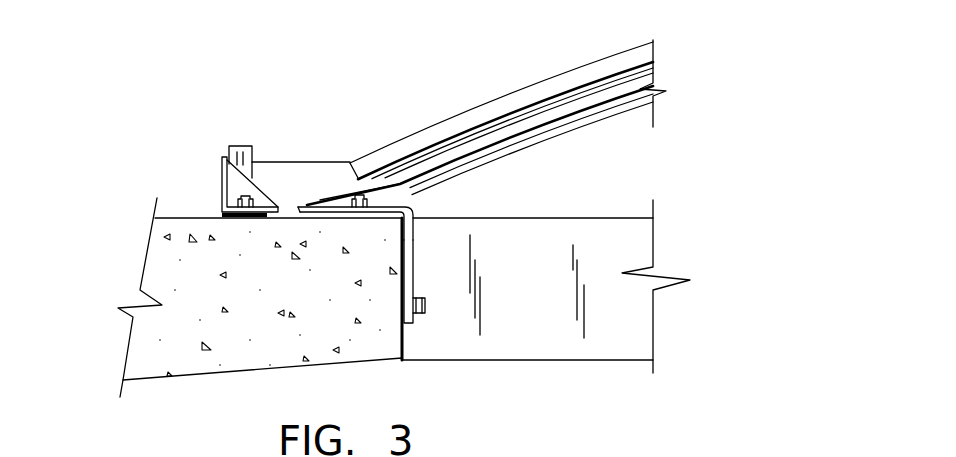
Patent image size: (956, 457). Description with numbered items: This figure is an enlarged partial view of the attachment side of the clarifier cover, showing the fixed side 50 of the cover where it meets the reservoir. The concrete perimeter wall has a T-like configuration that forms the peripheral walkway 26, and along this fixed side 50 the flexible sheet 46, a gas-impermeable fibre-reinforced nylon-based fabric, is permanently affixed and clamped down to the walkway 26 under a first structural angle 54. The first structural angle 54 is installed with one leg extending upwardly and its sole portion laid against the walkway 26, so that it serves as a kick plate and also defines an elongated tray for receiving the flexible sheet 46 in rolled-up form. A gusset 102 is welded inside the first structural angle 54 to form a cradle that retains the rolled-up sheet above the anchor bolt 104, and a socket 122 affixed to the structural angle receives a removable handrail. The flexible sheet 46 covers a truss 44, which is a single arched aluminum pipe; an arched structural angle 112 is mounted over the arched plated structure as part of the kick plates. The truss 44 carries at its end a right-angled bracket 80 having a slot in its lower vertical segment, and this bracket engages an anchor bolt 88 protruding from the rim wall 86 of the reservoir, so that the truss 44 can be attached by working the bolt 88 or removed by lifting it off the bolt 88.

The fixed side 50 is at (113, 37).
The peripheral walkway 26 is at (192, 217).
The first structural angle 54 is at (224, 160).
The anchor bolt 104 is at (247, 197).
The socket 122 is at (242, 145).
The gusset 102 is at (270, 197).
The arched structural angle 112 is at (417, 130).
The flexible sheet 46 is at (520, 110).
The truss 44 is at (597, 130).
The right-angled bracket 80 is at (413, 253).
The rim wall 86 is at (405, 343).
The anchor bolt 88 is at (427, 305).